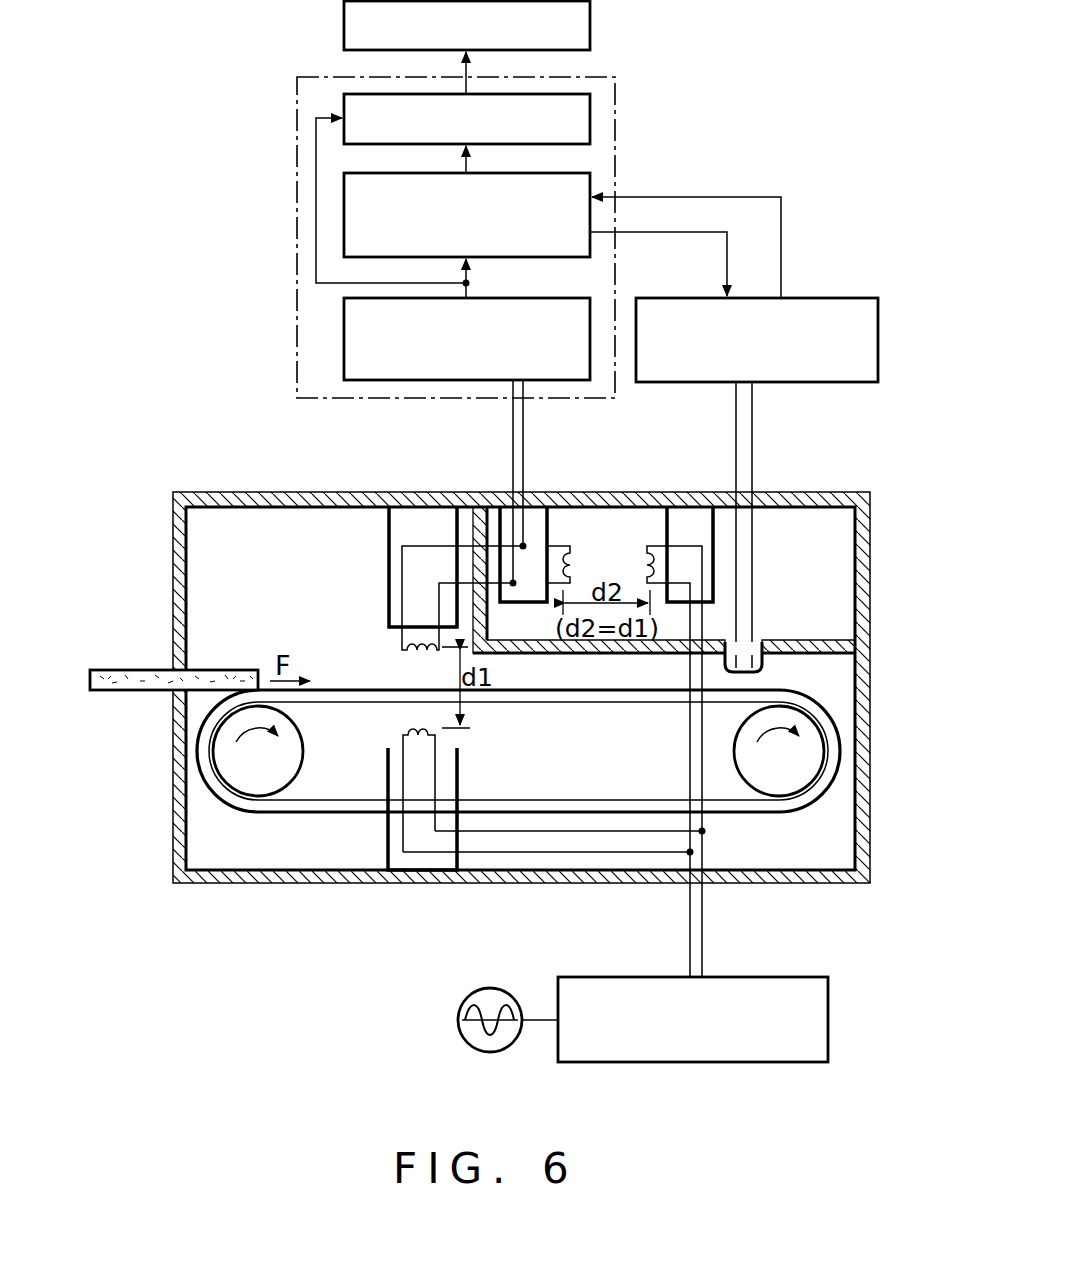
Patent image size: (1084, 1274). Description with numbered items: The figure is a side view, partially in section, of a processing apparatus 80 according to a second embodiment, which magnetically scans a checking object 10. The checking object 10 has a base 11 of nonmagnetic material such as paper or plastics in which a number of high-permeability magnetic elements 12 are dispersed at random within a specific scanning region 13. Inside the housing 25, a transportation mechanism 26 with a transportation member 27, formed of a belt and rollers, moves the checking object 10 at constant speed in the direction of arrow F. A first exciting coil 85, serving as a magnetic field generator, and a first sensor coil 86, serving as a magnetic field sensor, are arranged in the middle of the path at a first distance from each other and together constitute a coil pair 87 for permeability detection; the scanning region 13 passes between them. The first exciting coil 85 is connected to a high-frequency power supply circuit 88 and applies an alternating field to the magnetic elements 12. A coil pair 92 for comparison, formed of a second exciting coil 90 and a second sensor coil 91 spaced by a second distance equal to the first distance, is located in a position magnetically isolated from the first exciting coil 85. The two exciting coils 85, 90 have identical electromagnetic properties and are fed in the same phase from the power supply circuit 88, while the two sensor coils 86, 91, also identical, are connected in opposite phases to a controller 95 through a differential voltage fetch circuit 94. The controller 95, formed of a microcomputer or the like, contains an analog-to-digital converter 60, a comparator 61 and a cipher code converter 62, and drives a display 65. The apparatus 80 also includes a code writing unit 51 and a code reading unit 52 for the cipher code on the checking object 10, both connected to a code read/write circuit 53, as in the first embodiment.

The checking object 10 is at (126, 667).
The base 11 is at (156, 668).
The high-permeability magnetic elements 12 is at (136, 696).
The scanning region 13 is at (243, 668).
The housing 25 is at (872, 584).
The transportation mechanism 26 is at (518, 812).
The transportation member 27 is at (570, 708).
The code writing unit 51 is at (724, 666).
The code reading unit 52 is at (763, 660).
The code read/write circuit 53 is at (850, 298).
The analog-to-digital converter 60 is at (537, 295).
The comparator 61 is at (592, 118).
The cipher code converter 62 is at (592, 176).
The display 65 is at (592, 24).
The processing apparatus 80 is at (771, 164).
The first exciting coil 85 is at (440, 732).
The first sensor coil 86 is at (401, 648).
The coil pair for permeability detection 87 is at (362, 712).
The high-frequency power supply circuit 88 is at (787, 977).
The second exciting coil 90 is at (634, 567).
The second sensor coil 91 is at (574, 567).
The coil pair for comparison 92 is at (607, 533).
The differential voltage fetch circuit 94 is at (533, 533).
The controller 95 is at (287, 214).